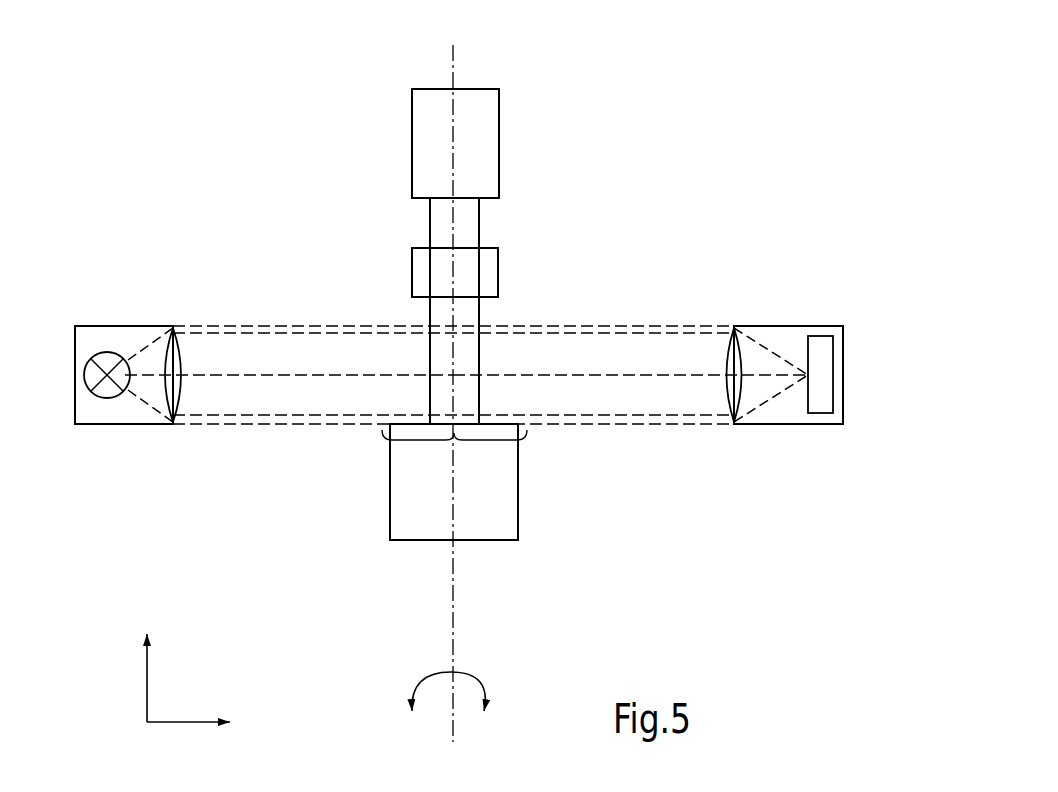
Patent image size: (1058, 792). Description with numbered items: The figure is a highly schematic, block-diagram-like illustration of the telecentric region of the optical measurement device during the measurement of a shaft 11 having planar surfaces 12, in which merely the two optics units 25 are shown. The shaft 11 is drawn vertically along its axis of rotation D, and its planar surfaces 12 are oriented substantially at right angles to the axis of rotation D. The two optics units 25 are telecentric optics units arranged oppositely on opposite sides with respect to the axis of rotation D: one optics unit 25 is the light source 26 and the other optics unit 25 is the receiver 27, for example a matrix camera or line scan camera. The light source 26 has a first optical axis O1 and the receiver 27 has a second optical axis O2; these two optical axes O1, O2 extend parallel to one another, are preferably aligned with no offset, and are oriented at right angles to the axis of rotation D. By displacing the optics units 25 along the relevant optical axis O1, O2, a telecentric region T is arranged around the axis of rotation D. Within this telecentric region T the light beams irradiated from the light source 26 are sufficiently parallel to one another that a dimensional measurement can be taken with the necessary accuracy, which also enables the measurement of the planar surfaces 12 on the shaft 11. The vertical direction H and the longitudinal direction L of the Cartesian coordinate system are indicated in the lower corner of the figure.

The shaft 11 is at (512, 115).
The planar surfaces 12 is at (492, 204).
The optics units 25 is at (472, 298).
The light source 26 is at (118, 286).
The receiver 27 is at (782, 298).
The first optical axis O1 is at (252, 376).
The second optical axis O2 is at (672, 376).
The telecentric region T is at (454, 482).
The axis of rotation D is at (453, 628).
The vertical direction H is at (145, 692).
The longitudinal direction L is at (178, 723).